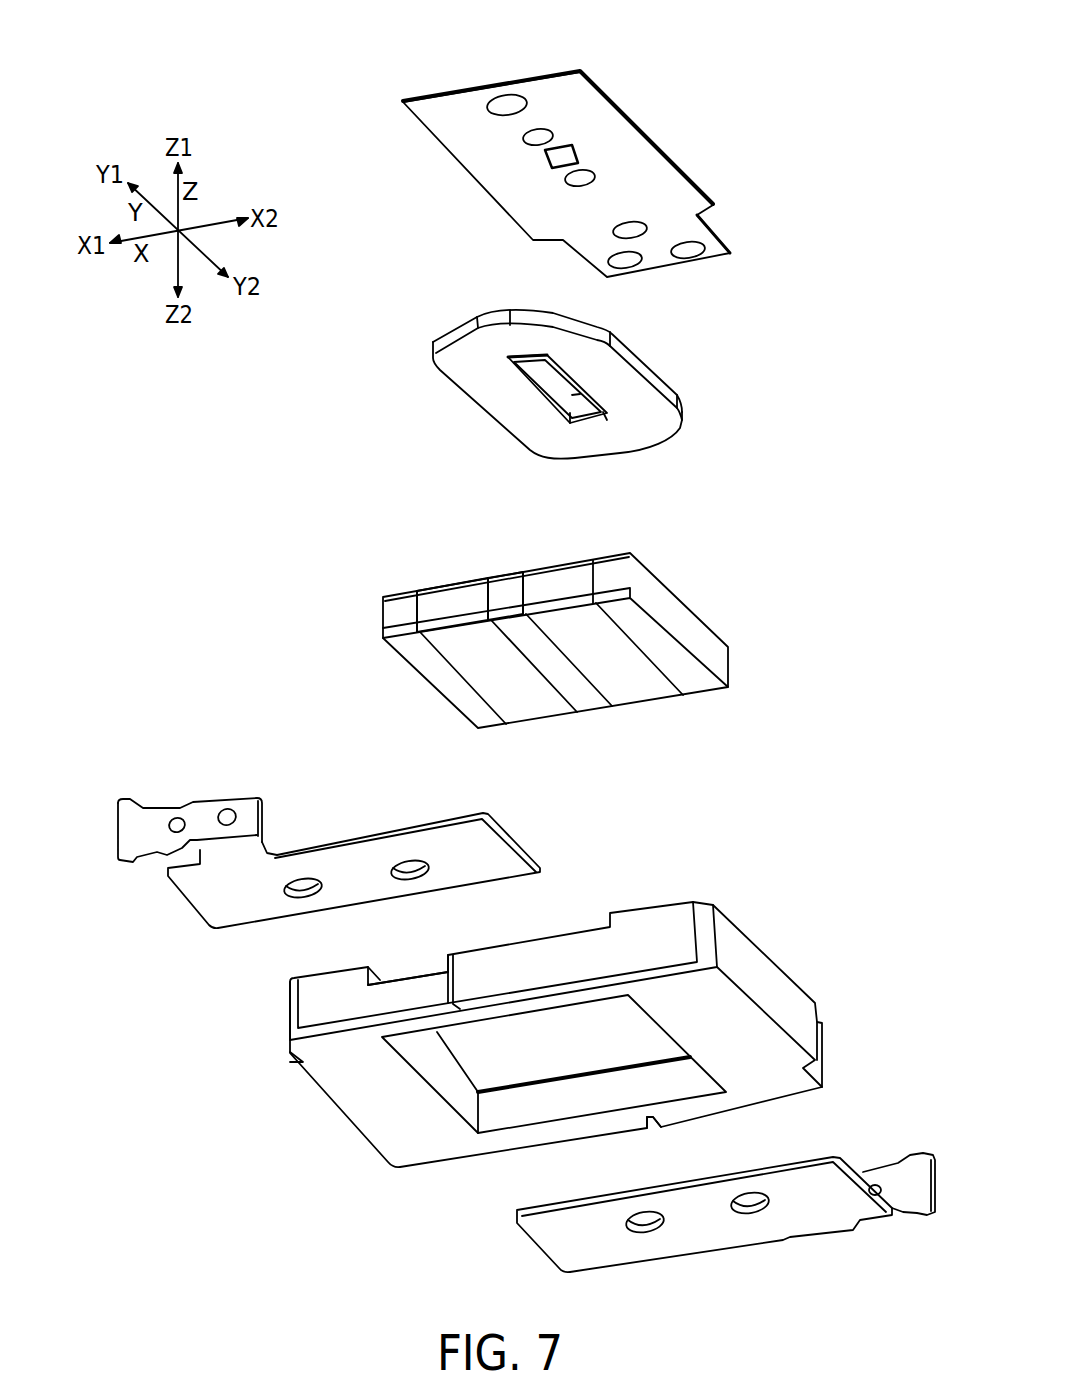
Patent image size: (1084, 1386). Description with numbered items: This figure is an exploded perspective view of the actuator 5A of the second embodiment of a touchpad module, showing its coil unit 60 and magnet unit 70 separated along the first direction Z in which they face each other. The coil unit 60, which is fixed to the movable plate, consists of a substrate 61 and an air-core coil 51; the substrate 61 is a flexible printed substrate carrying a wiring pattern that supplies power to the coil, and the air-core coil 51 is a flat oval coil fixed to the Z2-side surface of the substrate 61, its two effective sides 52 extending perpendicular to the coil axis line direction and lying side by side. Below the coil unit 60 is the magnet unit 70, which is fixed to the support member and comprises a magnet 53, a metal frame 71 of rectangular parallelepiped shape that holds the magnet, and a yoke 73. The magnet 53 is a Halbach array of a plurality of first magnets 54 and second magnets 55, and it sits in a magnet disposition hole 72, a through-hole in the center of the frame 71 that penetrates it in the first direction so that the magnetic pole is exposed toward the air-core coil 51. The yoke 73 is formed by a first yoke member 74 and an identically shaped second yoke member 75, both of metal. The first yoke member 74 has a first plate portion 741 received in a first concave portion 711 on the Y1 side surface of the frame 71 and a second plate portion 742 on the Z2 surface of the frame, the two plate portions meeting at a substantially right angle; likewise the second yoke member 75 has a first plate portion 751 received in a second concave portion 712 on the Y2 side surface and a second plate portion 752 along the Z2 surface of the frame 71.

The actuator 5A is at (342, 66).
The coil unit 60 is at (813, 213).
The substrate 61 is at (653, 167).
The air-core coil 51 is at (600, 317).
The effective side 52 is at (620, 377).
The magnet unit 70 is at (499, 900).
The magnet 53 is at (693, 605).
The first magnet 54 is at (452, 580).
The second magnet 55 is at (508, 572).
The frame 71 is at (753, 962).
The first concave portion 711 is at (423, 980).
The second concave portion 712 is at (690, 1112).
The magnet disposition hole 72 is at (480, 1022).
The yoke 73 is at (122, 1207).
The first yoke member 74 is at (192, 907).
The first plate portion 741 is at (208, 807).
The second plate portion 742 is at (497, 843).
The second yoke member 75 is at (518, 1225).
The first plate portion 751 is at (878, 1167).
The second plate portion 752 is at (712, 1233).